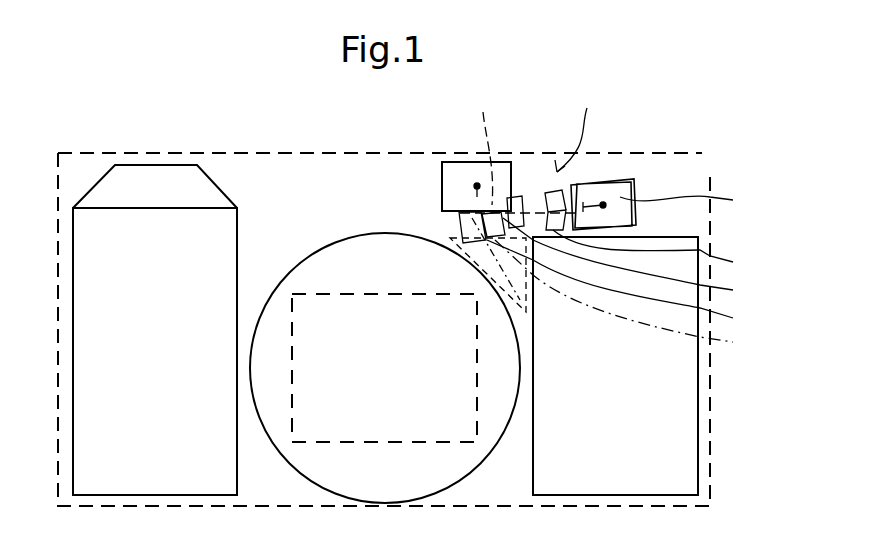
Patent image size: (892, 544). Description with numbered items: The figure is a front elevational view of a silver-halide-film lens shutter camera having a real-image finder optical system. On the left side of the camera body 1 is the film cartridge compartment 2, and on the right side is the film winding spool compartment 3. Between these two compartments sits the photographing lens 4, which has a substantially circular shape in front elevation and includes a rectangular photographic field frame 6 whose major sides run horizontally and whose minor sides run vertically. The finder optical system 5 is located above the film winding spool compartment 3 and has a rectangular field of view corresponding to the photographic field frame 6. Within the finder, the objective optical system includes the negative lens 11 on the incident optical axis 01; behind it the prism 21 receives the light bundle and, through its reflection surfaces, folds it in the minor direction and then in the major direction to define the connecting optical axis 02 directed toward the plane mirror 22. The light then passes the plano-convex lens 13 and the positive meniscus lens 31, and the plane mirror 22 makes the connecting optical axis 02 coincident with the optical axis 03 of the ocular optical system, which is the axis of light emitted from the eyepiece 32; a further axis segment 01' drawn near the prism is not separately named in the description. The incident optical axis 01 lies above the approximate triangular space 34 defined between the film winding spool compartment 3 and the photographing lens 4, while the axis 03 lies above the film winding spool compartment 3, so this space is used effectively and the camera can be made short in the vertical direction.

The camera body 1 is at (688, 170).
The film cartridge compartment 2 is at (100, 250).
The film winding spool compartment 3 is at (655, 392).
The photographing lens 4 is at (303, 278).
The finder optical system 5 is at (574, 128).
The photographic field frame 6 is at (336, 293).
The negative lens 11 is at (446, 186).
The plano-convex lens 13 is at (631, 259).
The prism 21 is at (623, 284).
The plane mirror 22 is at (690, 200).
The positive meniscus lens 31 is at (633, 234).
The eyepiece 32 is at (634, 228).
The approximate triangular space 34 is at (452, 243).
The incident optical axis 01 is at (460, 155).
The optical axis of emitted light 01' is at (520, 151).
The connecting optical axis 02 is at (543, 212).
The optical axis of the ocular optical system 03 is at (603, 186).